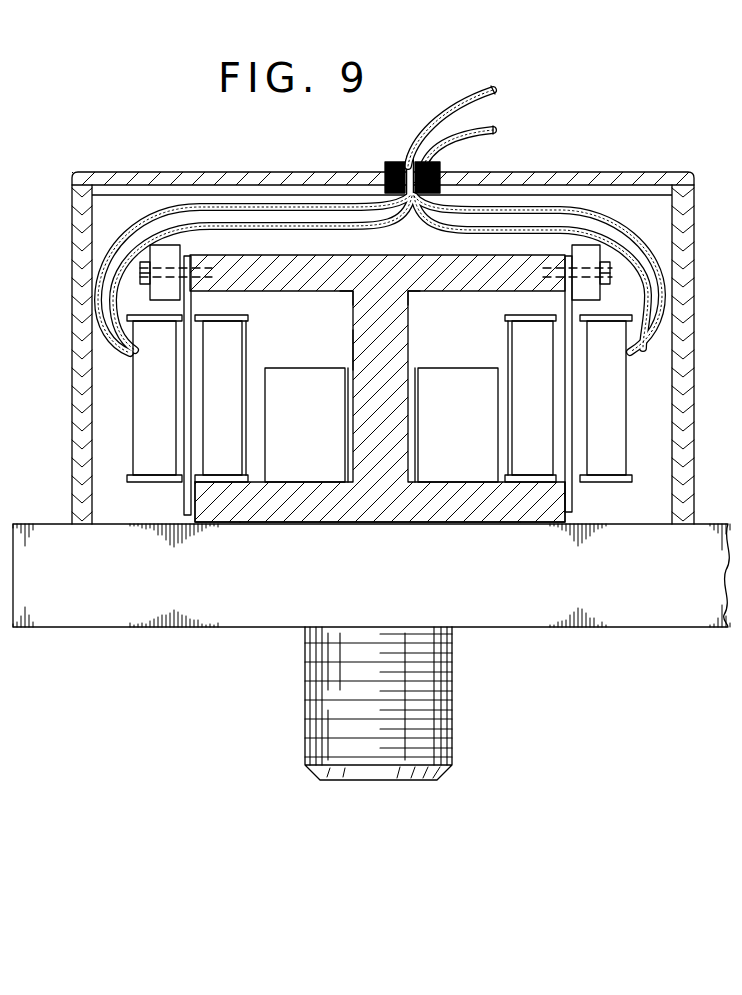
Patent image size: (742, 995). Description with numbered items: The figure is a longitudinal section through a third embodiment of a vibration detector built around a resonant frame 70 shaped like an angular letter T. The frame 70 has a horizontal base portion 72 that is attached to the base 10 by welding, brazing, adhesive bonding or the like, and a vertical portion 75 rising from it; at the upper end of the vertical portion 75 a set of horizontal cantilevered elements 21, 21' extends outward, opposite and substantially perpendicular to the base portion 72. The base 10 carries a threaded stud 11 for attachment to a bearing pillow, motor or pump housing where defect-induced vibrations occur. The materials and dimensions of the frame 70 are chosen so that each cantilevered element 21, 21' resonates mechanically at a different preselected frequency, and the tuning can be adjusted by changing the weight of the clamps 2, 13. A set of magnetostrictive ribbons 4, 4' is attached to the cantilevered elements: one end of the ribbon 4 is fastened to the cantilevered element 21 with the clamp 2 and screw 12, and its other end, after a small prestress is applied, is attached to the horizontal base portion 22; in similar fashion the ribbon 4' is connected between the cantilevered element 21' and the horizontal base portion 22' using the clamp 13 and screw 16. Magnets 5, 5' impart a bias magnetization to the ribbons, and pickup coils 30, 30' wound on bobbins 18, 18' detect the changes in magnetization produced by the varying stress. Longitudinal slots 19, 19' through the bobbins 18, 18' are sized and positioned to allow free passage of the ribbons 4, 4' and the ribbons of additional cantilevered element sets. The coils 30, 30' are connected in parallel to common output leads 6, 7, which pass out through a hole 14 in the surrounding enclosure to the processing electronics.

The clamp 2 is at (181, 250).
The ribbon 4 is at (564, 305).
The ribbon 4' is at (200, 306).
The magnet 5 is at (456, 425).
The magnet 5' is at (306, 425).
The output lead 6 is at (485, 129).
The output lead 7 is at (467, 110).
The base 10 is at (463, 598).
The threaded stud 11 is at (437, 698).
The screw 12 is at (140, 273).
The clamp 13 is at (572, 251).
The hole 14 is at (398, 161).
The screw 16 is at (611, 274).
The bobbin 18 is at (588, 489).
The bobbin 18' is at (171, 490).
The longitudinal slot 19 is at (589, 387).
The longitudinal slot 19' is at (161, 387).
The cantilevered element 21 is at (429, 305).
The cantilevered element 21' is at (325, 305).
The horizontal base portion 22 is at (542, 522).
The horizontal base portion 22' is at (217, 522).
The pickup coil 30 is at (624, 398).
The pickup coil 30' is at (136, 398).
The frame 70 is at (366, 362).
The horizontal base portion 72 is at (337, 527).
The vertical portion 75 is at (352, 348).